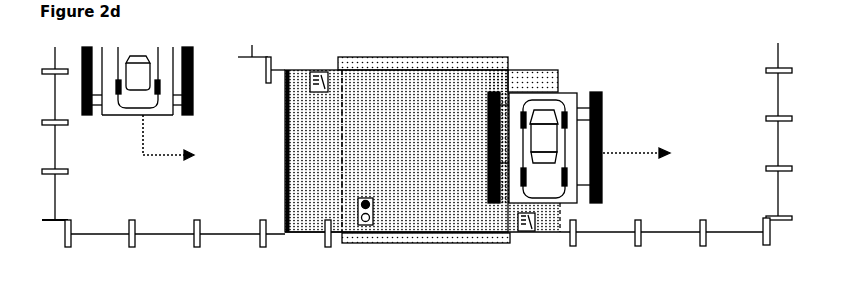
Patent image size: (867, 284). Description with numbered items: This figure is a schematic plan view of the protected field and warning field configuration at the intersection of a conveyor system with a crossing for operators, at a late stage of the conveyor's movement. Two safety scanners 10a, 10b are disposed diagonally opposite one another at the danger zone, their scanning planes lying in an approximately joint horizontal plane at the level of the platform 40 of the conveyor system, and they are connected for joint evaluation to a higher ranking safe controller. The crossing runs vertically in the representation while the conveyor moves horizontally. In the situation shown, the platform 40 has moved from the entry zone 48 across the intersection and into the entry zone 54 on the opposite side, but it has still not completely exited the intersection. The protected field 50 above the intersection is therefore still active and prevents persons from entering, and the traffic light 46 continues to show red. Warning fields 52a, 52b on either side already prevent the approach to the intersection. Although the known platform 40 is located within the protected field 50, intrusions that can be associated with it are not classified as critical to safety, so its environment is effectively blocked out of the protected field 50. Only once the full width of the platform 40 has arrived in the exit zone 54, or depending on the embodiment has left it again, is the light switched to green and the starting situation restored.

The safety scanner 10a is at (313, 64).
The safety scanner 10b is at (522, 233).
The platform 40 is at (109, 121).
The traffic light 46 is at (374, 230).
The entry zone 48 is at (316, 243).
The protected field 50 is at (383, 101).
The warning field 52a is at (432, 60).
The warning field 52b is at (425, 243).
The exit zone 54 is at (542, 55).